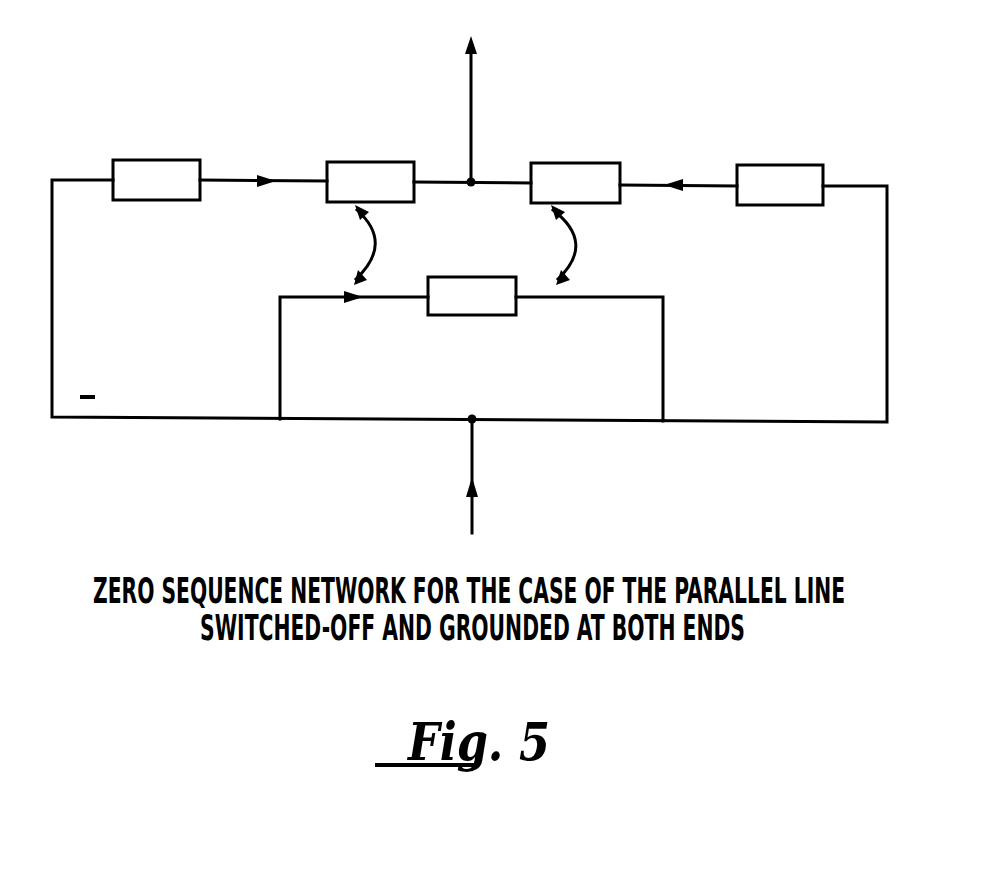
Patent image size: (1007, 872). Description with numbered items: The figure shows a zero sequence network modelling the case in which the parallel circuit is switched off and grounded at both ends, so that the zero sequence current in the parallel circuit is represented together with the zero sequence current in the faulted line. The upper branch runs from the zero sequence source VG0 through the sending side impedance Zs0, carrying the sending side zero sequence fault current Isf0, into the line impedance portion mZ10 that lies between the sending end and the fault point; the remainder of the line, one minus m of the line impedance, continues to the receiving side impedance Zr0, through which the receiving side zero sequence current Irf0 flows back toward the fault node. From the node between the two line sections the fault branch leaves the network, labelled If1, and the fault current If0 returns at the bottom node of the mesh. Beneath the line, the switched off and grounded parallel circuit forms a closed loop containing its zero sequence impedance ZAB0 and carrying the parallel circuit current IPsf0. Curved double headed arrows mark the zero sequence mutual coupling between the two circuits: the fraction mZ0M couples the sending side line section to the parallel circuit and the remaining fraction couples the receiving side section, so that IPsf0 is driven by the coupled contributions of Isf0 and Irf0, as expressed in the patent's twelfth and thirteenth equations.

The sending side zero sequence impedance Zs0 is at (156, 204).
The sending side zero sequence fault current Isf0 is at (260, 159).
The line zero sequence impedance to the fault mZ10 is at (370, 162).
The receiving side zero sequence fault current Irf0 is at (680, 163).
The receiving side zero sequence impedance Zr0 is at (780, 210).
The fault branch current If1=If2=If0=If/3 If1 is at (344, 96).
The zero sequence mutual coupling to the fault mZ0M is at (406, 245).
The zero sequence source voltage VG0 is at (100, 290).
The parallel circuit zero sequence current IPsf0 is at (356, 323).
The parallel line zero sequence impedance ZAB0 is at (472, 316).
The zero sequence fault current If0 is at (500, 476).